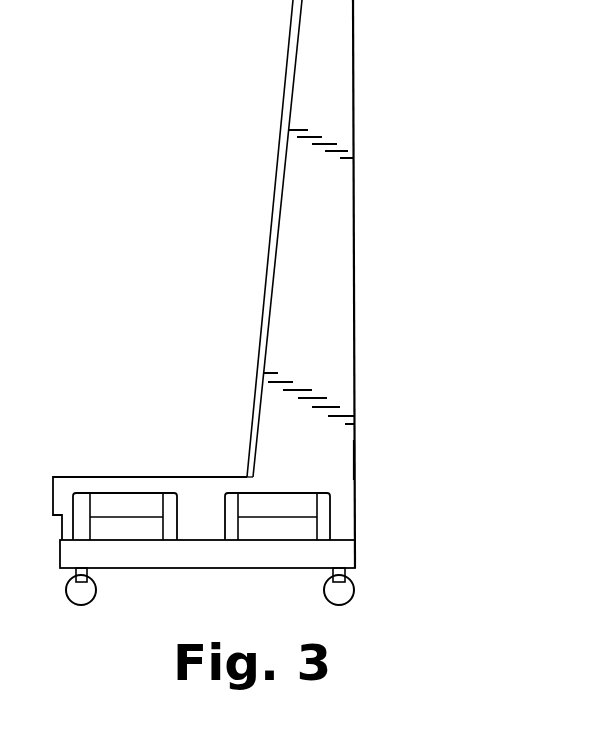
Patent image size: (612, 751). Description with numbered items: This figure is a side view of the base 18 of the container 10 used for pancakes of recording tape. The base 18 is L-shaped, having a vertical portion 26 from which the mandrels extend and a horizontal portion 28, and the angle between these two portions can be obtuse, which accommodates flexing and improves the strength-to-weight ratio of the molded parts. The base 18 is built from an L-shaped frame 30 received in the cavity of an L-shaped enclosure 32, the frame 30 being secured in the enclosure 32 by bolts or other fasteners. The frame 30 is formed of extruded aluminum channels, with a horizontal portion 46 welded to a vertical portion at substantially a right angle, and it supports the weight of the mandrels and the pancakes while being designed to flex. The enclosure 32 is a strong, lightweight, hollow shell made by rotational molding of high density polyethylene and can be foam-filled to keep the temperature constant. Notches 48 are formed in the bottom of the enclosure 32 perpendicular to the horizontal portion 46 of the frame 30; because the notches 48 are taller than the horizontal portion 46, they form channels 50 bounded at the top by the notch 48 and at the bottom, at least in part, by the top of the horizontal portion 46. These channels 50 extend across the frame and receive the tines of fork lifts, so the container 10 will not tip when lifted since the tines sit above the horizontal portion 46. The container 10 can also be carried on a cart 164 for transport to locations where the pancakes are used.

The container 10 is at (440, 88).
The base 18 is at (360, 252).
The vertical portion 26 is at (345, 338).
The L-shaped enclosure 32 is at (358, 460).
The horizontal portion 28 is at (192, 480).
The cart 164 is at (347, 555).
The L-shaped frame 30 is at (151, 532).
The channels 50 is at (243, 500).
The horizontal portion 46 is at (105, 530).
The notches 48 is at (315, 523).